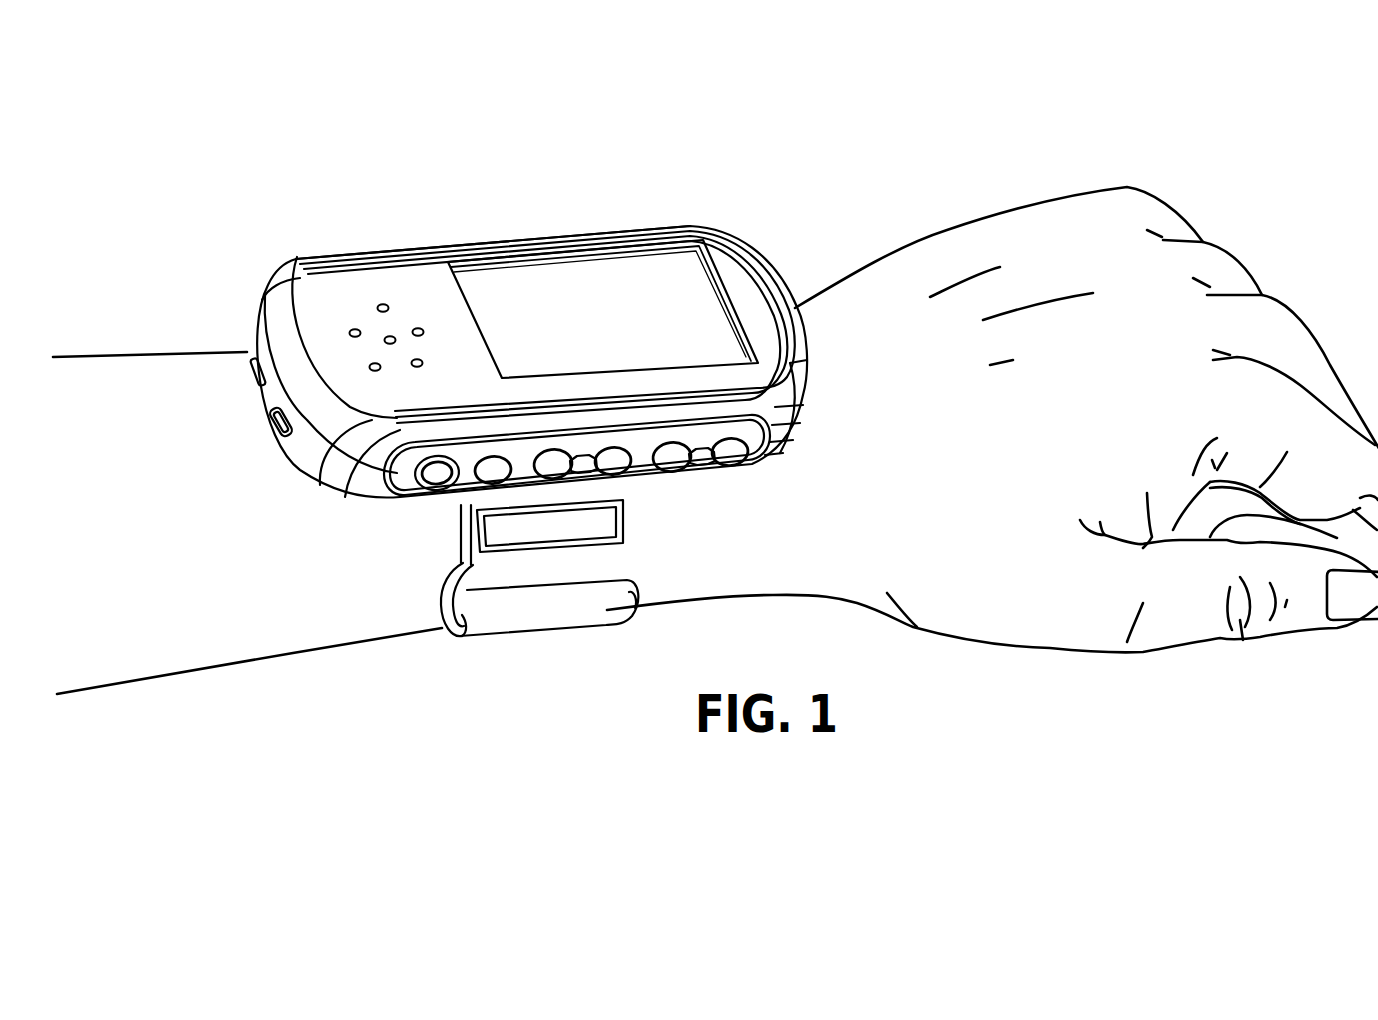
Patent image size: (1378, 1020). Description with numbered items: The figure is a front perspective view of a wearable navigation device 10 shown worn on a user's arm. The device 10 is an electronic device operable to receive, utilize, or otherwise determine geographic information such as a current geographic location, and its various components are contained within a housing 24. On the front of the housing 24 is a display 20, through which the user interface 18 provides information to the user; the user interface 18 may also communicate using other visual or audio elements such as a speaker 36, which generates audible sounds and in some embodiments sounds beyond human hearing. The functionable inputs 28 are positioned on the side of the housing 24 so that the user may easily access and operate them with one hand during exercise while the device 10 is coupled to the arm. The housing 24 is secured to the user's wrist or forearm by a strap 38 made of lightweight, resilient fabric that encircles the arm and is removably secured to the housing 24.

The navigation device 10 is at (757, 230).
The user interface 18 is at (453, 530).
The display 20 is at (496, 278).
The housing 24 is at (374, 258).
The functionable inputs 28 is at (493, 487).
The speaker 36 is at (339, 309).
The strap 38 is at (535, 613).